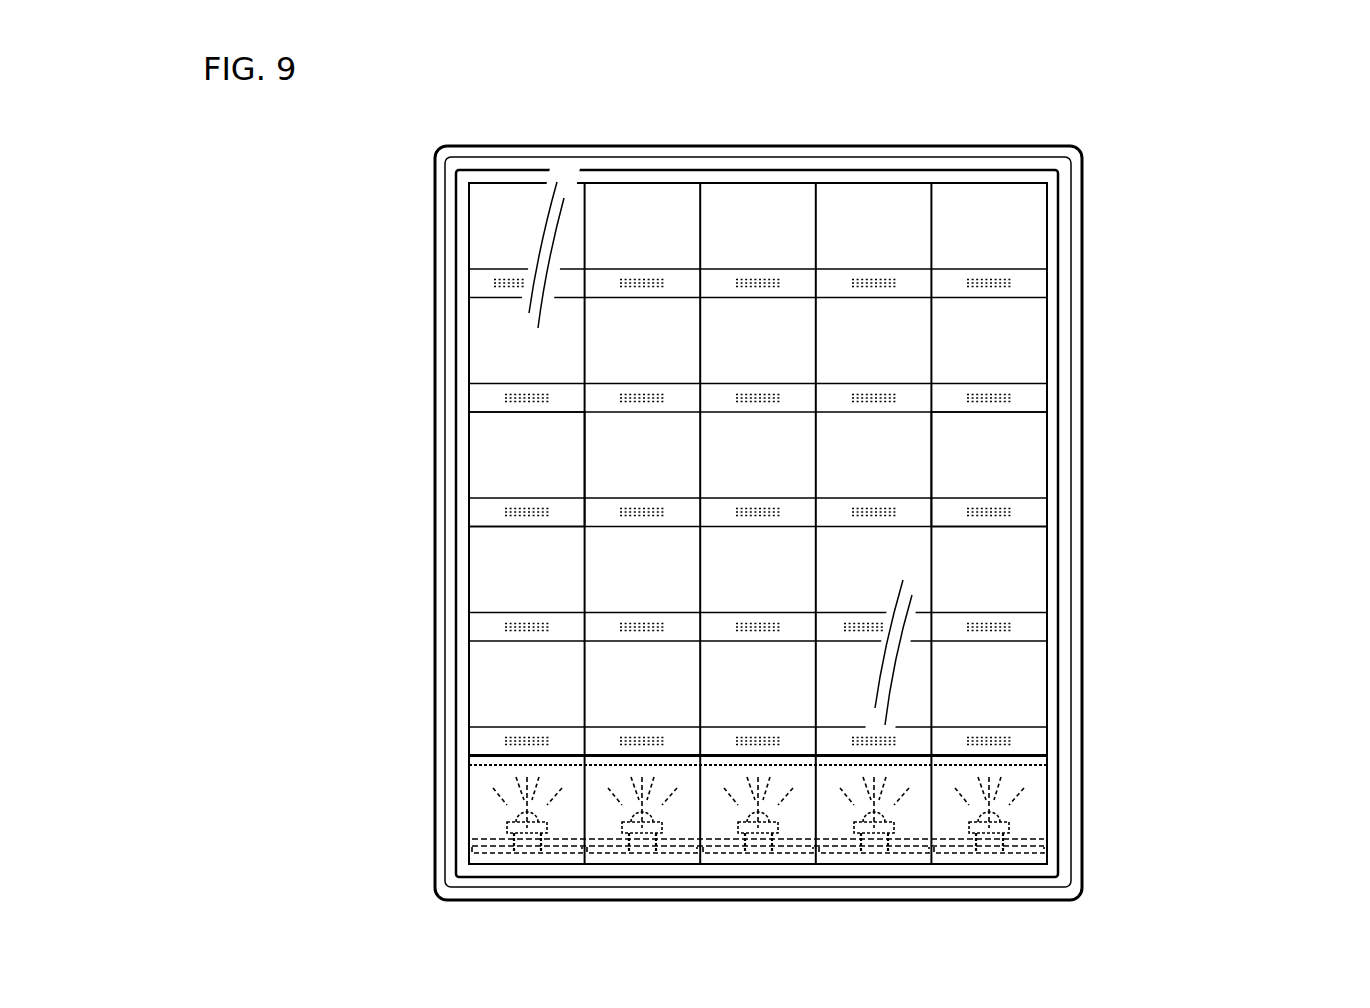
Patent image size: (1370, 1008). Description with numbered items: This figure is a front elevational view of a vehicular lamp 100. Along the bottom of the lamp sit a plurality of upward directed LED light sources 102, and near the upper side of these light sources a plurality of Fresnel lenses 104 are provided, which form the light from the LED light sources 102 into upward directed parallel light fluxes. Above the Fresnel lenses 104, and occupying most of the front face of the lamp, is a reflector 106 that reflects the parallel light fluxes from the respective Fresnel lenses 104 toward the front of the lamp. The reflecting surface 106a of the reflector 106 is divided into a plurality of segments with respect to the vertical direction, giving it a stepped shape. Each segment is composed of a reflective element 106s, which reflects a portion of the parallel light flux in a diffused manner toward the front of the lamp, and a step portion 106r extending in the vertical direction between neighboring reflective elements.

The vehicular lamp 100 is at (1157, 260).
The LED light sources 102 is at (512, 808).
The Fresnel lenses 104 is at (490, 755).
The reflector 106 is at (468, 326).
The reflecting surface 106a is at (520, 453).
The step portion 106r is at (1010, 457).
The reflective element 106s is at (1025, 512).